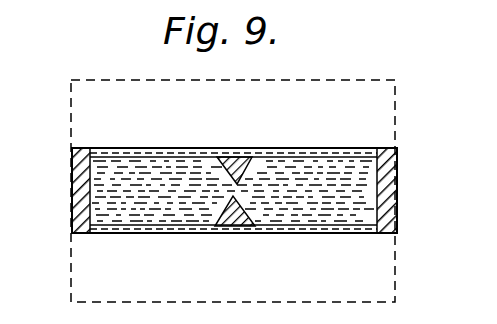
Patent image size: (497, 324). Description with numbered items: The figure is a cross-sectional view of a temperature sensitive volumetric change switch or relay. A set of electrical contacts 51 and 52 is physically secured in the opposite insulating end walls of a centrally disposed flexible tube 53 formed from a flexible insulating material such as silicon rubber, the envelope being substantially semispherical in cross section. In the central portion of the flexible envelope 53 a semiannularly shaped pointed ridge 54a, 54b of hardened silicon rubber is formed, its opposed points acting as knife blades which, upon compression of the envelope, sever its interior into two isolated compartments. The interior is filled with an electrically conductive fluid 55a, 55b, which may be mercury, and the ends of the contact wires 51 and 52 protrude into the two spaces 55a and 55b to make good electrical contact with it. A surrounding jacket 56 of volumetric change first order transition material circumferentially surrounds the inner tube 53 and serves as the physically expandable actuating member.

The electrical contact 51 is at (46, 185).
The electrical contact 52 is at (397, 190).
The flexible tube 53 is at (100, 233).
The pointed ridge 54a is at (241, 155).
The pointed ridge 54b is at (237, 229).
The electrically conductive fluid 55a is at (163, 191).
The electrically conductive fluid 55b is at (305, 191).
The surrounding jacket of volumetric change first order transition material 56 is at (383, 93).